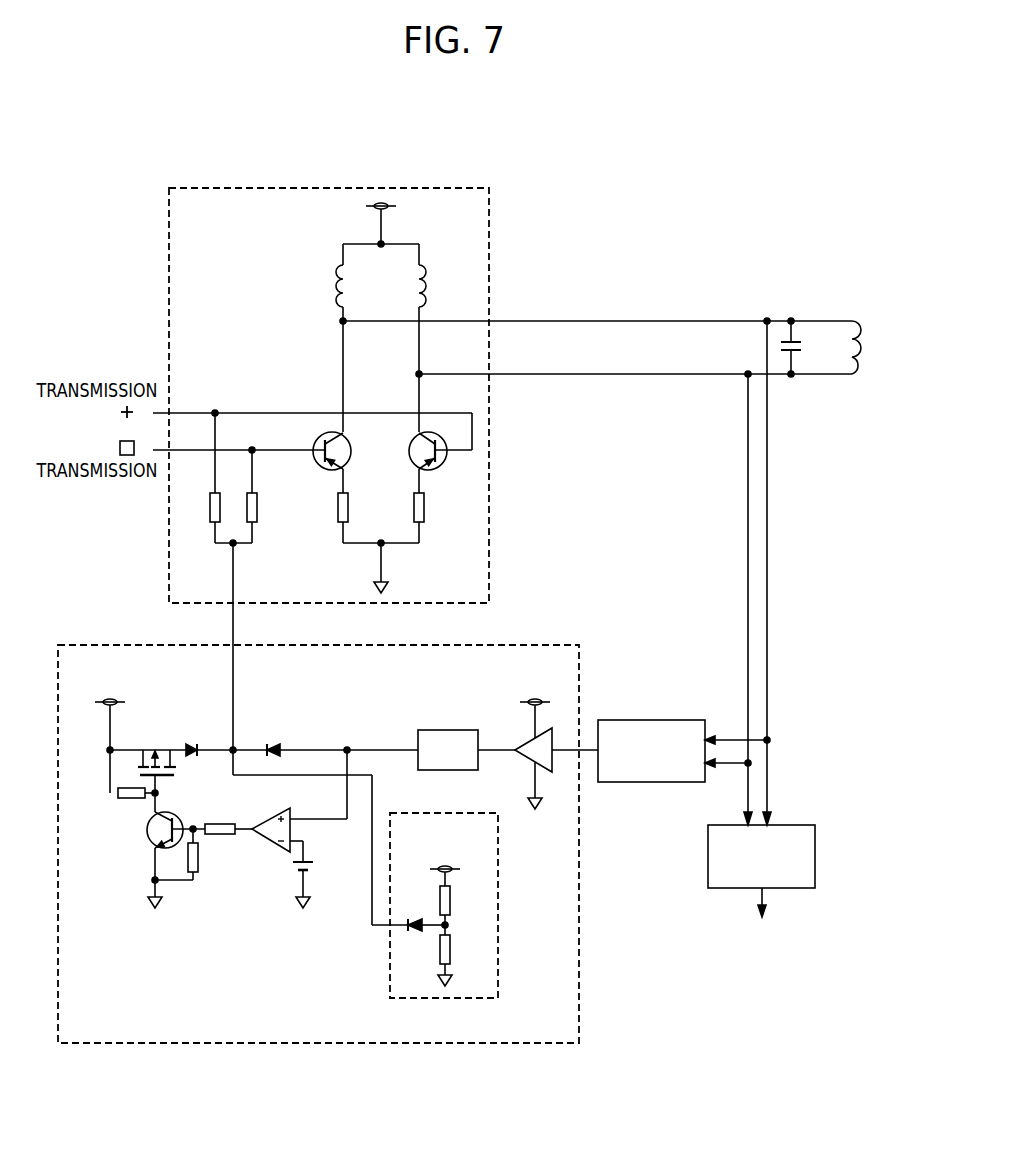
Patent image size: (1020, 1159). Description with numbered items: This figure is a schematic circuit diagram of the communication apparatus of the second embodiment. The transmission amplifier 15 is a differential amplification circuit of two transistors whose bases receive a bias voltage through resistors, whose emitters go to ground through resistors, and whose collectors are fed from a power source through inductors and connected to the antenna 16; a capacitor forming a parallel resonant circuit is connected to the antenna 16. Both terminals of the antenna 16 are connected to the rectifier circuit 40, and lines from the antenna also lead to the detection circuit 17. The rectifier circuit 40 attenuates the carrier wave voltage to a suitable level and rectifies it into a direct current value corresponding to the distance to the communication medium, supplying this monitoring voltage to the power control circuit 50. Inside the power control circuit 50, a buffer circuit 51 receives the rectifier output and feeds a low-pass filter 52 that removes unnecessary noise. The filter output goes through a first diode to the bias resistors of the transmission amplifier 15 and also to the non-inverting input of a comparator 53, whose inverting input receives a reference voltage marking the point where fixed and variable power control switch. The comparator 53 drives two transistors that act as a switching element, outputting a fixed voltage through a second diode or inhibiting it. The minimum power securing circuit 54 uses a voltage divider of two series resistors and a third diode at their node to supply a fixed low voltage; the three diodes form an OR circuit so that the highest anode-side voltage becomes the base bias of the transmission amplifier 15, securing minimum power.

The transmission amplifier 15 is at (317, 188).
The antenna 16 is at (835, 320).
The detection circuit 17 is at (797, 825).
The rectifier circuit 40 is at (653, 720).
The power control circuit 50 is at (579, 1022).
The buffer circuit 51 is at (527, 763).
The low-pass filter 52 is at (443, 730).
The comparator 53 is at (270, 845).
The minimum power securing circuit 54 is at (498, 890).